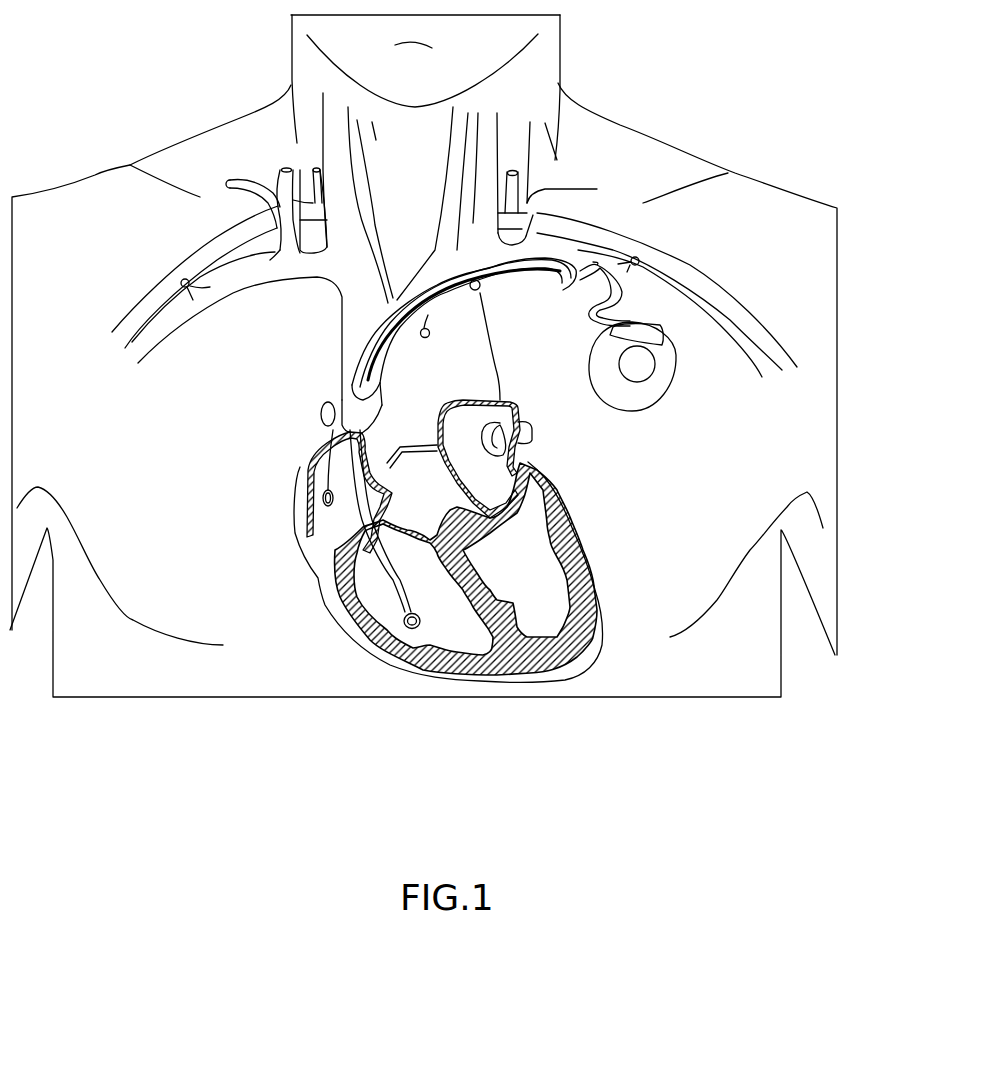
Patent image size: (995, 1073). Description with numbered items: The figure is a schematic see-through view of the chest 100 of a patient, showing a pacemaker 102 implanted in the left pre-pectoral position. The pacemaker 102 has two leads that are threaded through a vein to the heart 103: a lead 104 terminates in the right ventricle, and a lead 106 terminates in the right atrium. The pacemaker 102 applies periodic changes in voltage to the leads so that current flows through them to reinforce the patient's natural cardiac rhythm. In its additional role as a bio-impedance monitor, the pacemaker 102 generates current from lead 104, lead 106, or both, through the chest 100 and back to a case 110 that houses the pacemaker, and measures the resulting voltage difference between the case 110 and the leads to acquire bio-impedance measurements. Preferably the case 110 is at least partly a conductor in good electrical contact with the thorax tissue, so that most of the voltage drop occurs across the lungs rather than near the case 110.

The chest 100 is at (690, 470).
The pacemaker 102 is at (685, 338).
The heart 103 is at (620, 647).
The lead 104 is at (372, 640).
The lead 106 is at (320, 500).
The case 110 is at (660, 388).